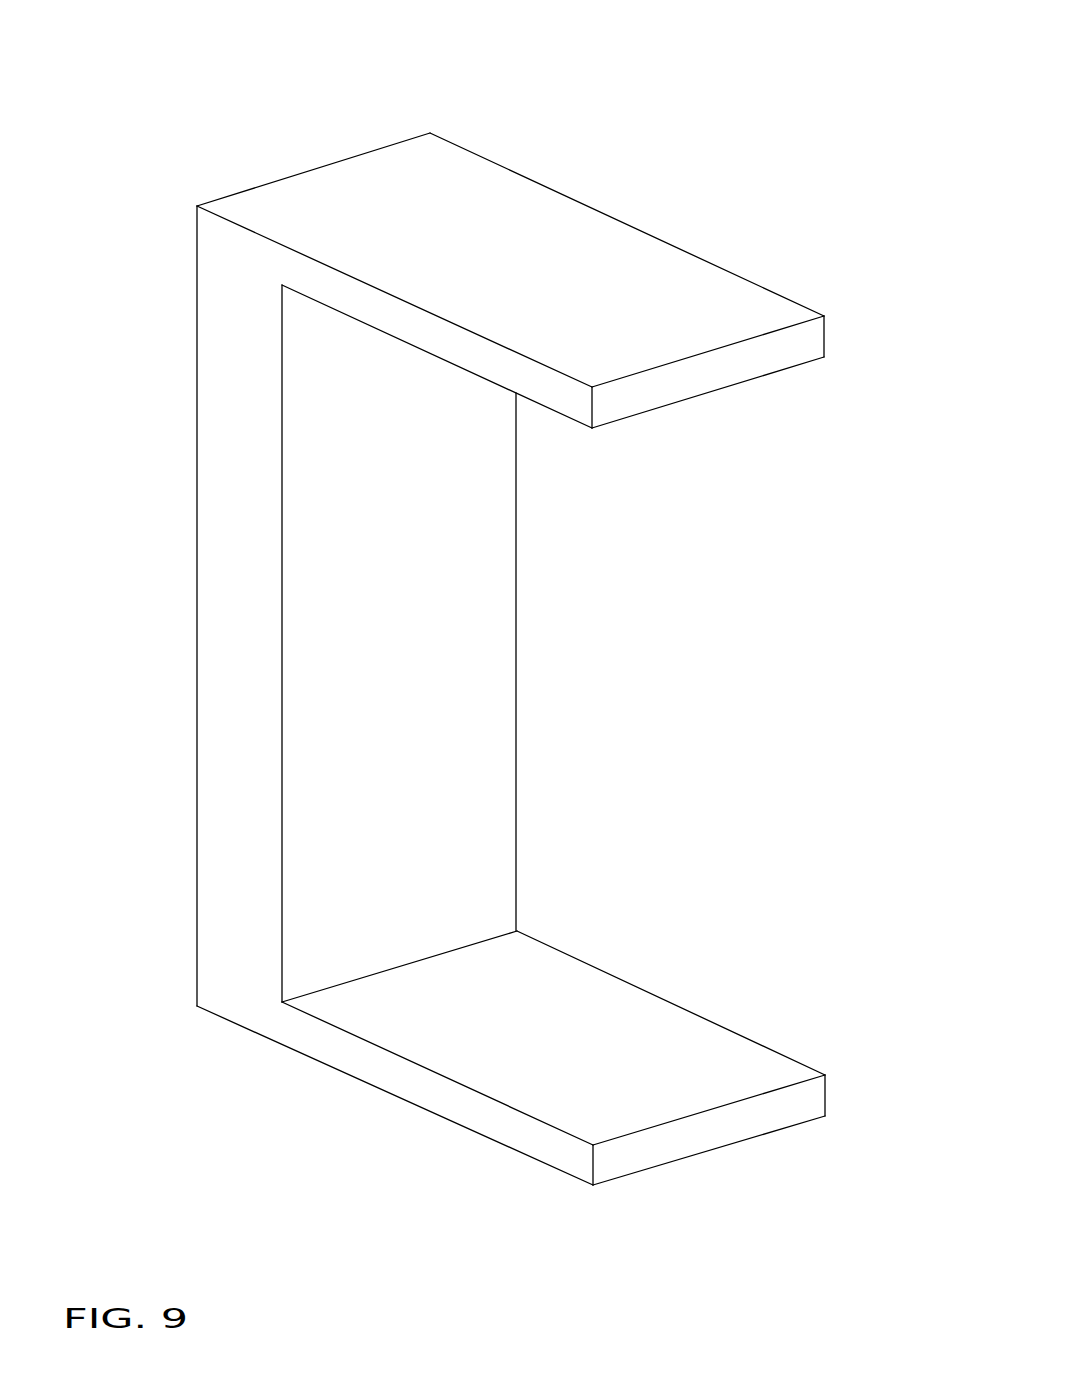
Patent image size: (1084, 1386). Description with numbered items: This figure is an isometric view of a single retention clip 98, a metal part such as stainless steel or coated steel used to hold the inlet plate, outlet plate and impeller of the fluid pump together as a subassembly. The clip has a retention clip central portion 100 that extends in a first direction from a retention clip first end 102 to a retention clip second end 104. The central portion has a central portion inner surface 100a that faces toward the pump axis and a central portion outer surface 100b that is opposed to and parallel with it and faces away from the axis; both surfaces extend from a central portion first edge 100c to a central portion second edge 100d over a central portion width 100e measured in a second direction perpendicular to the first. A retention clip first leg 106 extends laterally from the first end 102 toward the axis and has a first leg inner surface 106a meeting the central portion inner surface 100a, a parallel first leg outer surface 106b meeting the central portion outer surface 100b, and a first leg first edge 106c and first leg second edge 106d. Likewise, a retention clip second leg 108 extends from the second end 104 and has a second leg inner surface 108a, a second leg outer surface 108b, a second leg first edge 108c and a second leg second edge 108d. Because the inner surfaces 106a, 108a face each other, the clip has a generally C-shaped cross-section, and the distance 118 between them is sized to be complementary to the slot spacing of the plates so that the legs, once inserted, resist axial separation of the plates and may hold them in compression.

The retention clip 98 is at (500, 649).
The retention clip central portion 100 is at (446, 626).
The central portion inner surface 100a is at (420, 626).
The central portion outer surface 100b is at (197, 318).
The central portion first edge 100c is at (238, 788).
The central portion second edge 100d is at (516, 542).
The central portion width 100e is at (517, 762).
The retention clip first end 102 is at (220, 1017).
The retention clip second end 104 is at (272, 202).
The retention clip first leg 106 is at (613, 1033).
The first leg inner surface 106a is at (613, 1022).
The first leg outer surface 106b is at (713, 1152).
The first leg first edge 106c is at (455, 1107).
The first leg second edge 106d is at (622, 980).
The retention clip second leg 108 is at (526, 260).
The second leg inner surface 108a is at (526, 260).
The second leg outer surface 108b is at (510, 195).
The second leg first edge 108c is at (542, 386).
The second leg second edge 108d is at (773, 290).
The distance 118 is at (853, 1066).